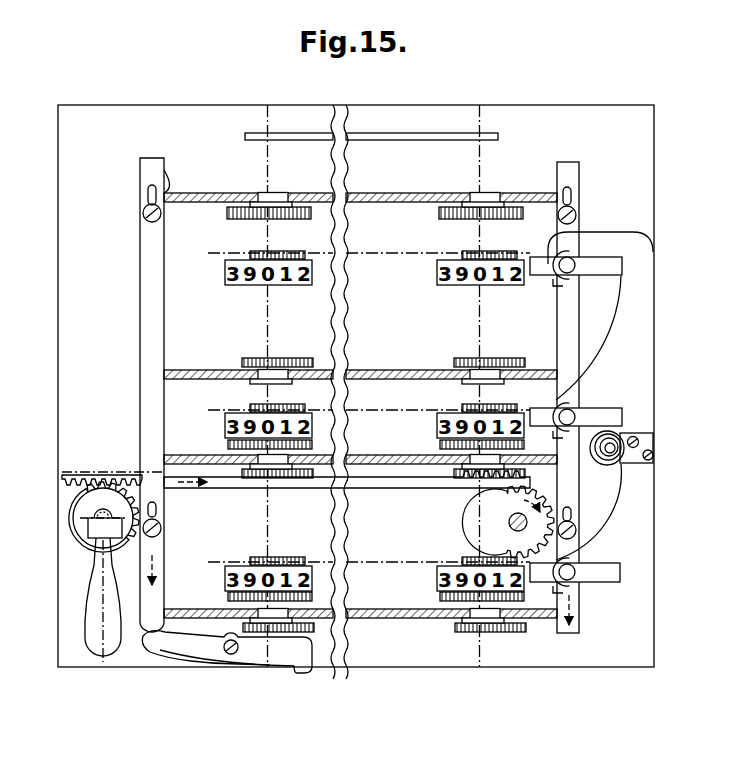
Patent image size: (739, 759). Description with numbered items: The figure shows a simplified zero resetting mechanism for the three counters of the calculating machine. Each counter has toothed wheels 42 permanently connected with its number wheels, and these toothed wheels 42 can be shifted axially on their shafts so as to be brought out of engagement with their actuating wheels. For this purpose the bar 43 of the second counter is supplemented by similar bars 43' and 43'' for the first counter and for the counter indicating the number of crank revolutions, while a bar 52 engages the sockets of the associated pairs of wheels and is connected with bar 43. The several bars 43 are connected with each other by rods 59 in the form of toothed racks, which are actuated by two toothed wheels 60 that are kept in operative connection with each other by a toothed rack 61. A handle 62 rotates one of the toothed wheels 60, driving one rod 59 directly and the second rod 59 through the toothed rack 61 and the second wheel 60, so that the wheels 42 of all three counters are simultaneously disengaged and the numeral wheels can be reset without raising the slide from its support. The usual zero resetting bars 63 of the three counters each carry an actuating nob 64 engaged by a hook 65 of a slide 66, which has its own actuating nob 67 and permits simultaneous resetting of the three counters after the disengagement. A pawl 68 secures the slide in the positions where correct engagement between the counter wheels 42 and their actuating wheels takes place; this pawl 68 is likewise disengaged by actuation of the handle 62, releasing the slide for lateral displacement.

The toothed wheel 42 is at (302, 447).
The bar 43 is at (360, 386).
The bar 43' is at (360, 487).
The bar 43'' is at (360, 628).
The bar 52 is at (396, 196).
The rod 59 is at (150, 321).
The toothed wheel 60 is at (84, 528).
The toothed rack 61 is at (80, 475).
The handle 62 is at (98, 648).
The zero resetting bar 63 is at (385, 258).
The actuating nob 64 is at (576, 260).
The hook 65 is at (563, 281).
The slide 66 is at (636, 342).
The actuating nob 67 is at (614, 462).
The pawl 68 is at (292, 654).